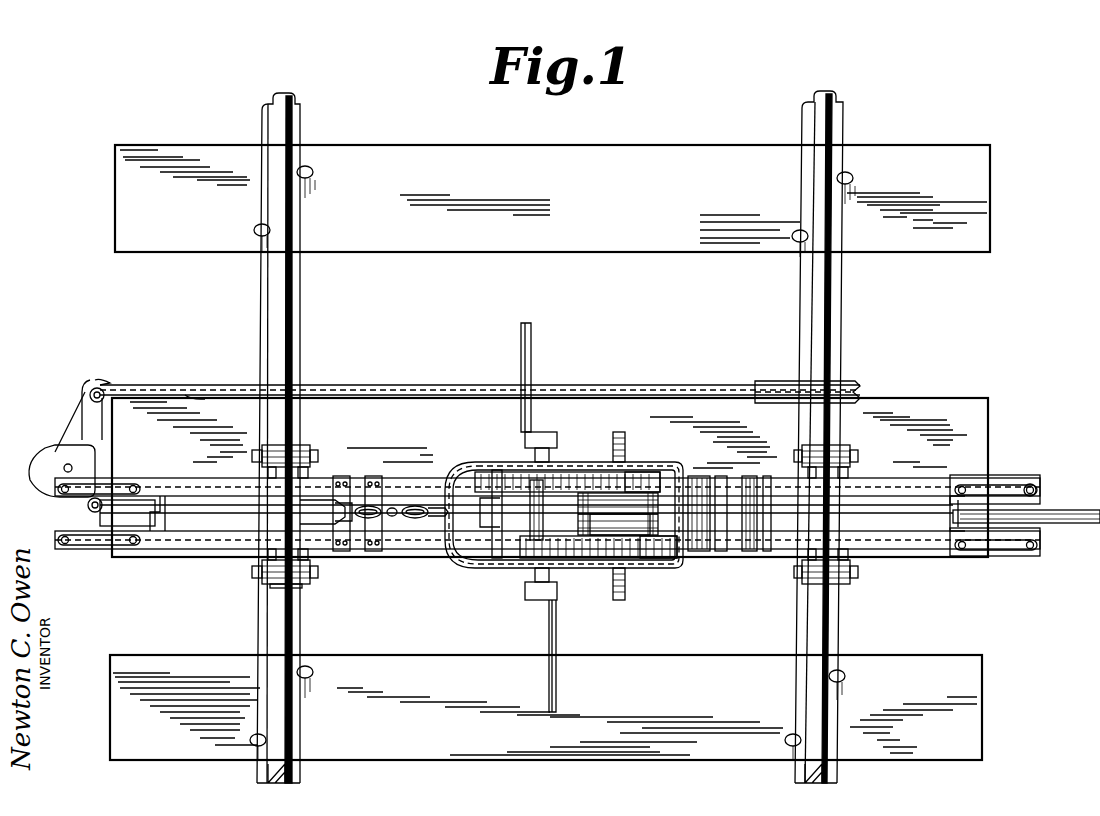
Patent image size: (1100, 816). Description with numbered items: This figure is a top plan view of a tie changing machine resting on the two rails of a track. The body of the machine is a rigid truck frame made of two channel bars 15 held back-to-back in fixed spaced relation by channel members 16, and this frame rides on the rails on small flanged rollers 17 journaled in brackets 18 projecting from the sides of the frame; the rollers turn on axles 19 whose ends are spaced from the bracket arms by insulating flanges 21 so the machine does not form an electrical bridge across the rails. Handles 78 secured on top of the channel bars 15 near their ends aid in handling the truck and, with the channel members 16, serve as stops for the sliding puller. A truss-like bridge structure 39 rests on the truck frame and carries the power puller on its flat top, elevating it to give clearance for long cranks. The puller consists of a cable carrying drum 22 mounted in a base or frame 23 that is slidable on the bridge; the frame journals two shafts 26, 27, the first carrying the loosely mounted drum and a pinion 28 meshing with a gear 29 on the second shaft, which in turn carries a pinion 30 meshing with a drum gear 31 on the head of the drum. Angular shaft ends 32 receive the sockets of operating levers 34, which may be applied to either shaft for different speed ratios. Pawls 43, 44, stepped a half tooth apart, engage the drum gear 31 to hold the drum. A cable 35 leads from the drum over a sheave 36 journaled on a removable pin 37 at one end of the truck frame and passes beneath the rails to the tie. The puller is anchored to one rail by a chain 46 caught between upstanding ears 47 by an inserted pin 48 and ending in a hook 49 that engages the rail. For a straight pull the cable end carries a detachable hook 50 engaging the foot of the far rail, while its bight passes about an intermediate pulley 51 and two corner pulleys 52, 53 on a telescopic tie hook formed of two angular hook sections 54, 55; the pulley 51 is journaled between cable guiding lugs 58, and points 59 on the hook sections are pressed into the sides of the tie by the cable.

The channel bars 15 is at (178, 478).
The channel members 16 is at (160, 532).
The flanged rollers 17 is at (300, 455).
The brackets 18 is at (300, 498).
The axles 19 is at (255, 452).
The insulating flanges 21 is at (305, 590).
The cable carrying drum 22 is at (612, 505).
The base or frame 23 is at (690, 465).
The shaft 26 is at (632, 560).
The shaft 27 is at (500, 540).
The pinion 28 is at (635, 472).
The gear 29 is at (513, 472).
The pinion 30 is at (535, 520).
The drum gear 31 is at (682, 558).
The shaft end 32 is at (625, 440).
The operating levers 34 is at (533, 370).
The cable 35 is at (418, 385).
The sheave 36 is at (1058, 512).
The pin 37 is at (1040, 480).
The bridge structure 39 is at (390, 550).
The pawl 43 is at (655, 545).
The pawl 44 is at (620, 545).
The chain 46 is at (420, 505).
The upstanding ears 47 is at (447, 530).
The pin or bolt 48 is at (455, 475).
The hook 49 is at (318, 505).
The detachable hook 50 is at (772, 382).
The intermediate pulley 51 is at (58, 448).
The corner pulley 52 is at (88, 510).
The corner pulley 53 is at (90, 380).
The hook section 54 is at (135, 385).
The hook section 55 is at (118, 528).
The cable guiding lugs 58 is at (48, 455).
The points 59 is at (190, 392).
The handles 78 is at (120, 486).